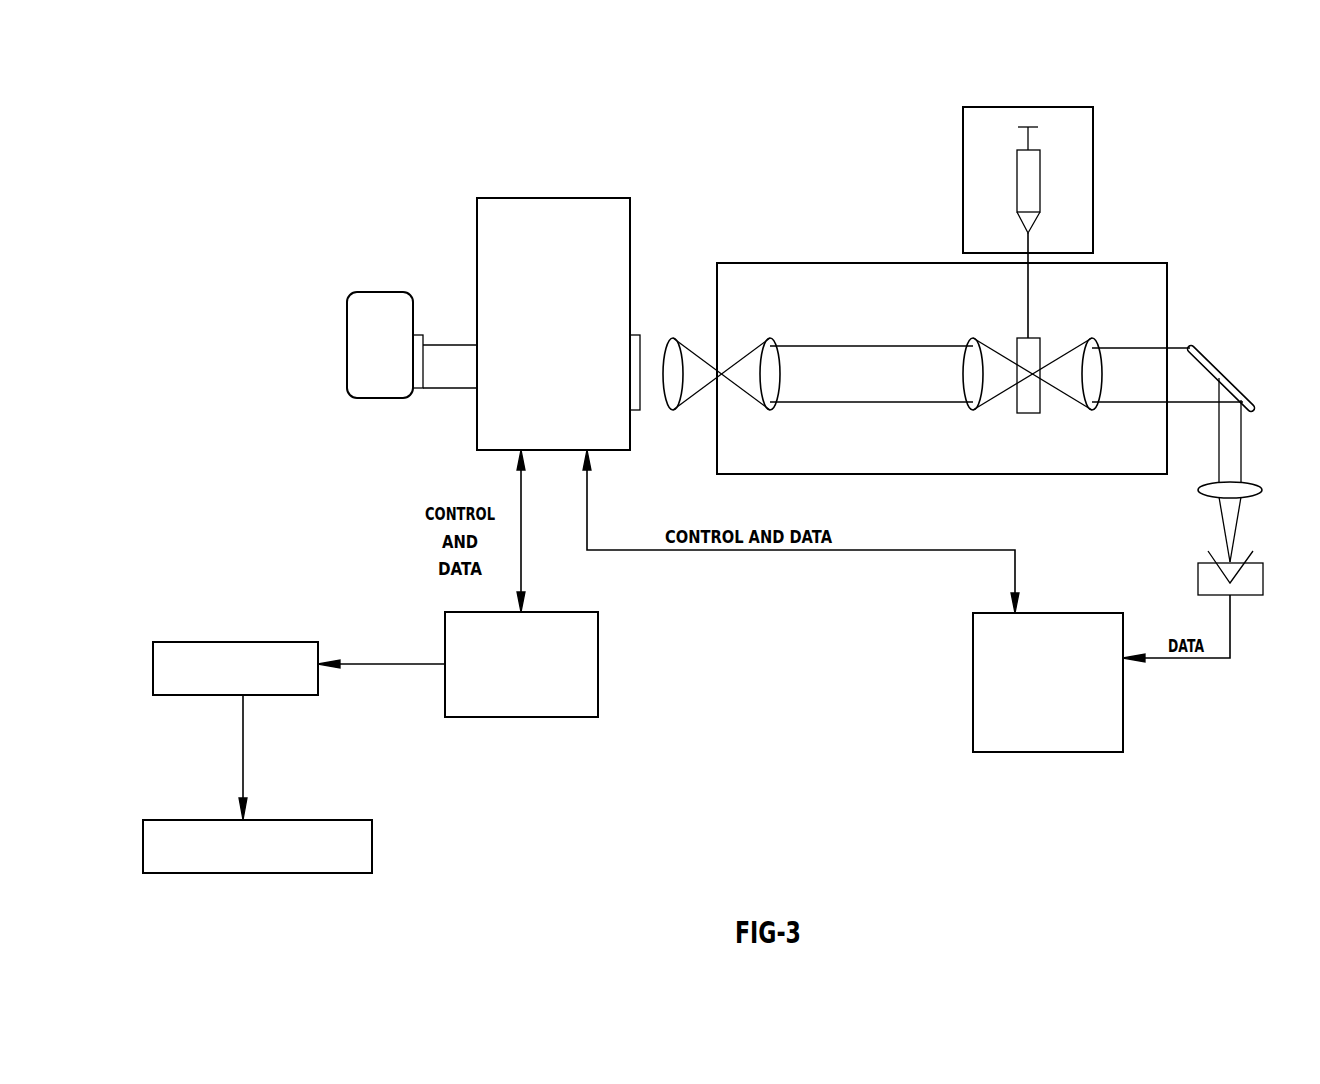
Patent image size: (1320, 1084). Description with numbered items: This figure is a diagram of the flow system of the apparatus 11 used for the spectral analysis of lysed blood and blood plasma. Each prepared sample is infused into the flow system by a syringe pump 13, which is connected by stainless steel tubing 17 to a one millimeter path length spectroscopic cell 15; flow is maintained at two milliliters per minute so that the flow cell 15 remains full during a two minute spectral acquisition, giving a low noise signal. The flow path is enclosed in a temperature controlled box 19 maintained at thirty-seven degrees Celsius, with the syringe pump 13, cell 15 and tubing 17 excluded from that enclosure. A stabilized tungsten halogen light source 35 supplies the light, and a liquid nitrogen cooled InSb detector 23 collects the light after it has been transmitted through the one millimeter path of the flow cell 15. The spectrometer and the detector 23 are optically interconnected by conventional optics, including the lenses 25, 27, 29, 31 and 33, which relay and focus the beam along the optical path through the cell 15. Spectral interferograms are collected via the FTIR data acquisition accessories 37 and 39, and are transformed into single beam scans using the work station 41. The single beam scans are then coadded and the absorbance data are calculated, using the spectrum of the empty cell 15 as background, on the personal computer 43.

The apparatus 11 is at (686, 168).
The syringe pump 13 is at (1073, 185).
The spectroscopic cell 15 is at (1040, 345).
The stainless steel tubing 17 is at (1026, 299).
The temperature controlled box 19 is at (788, 263).
The InSb detector 23 is at (553, 198).
The lens 25 is at (676, 340).
The lens 27 is at (773, 409).
The lens 29 is at (973, 408).
The lens 31 is at (1094, 409).
The lens 33 is at (1262, 487).
The light source 35 is at (360, 357).
The FTIR data acquisition accessory 37 is at (1125, 724).
The FTIR data acquisition accessory 39 is at (598, 677).
The work station 41 is at (241, 651).
The personal computer 43 is at (362, 846).